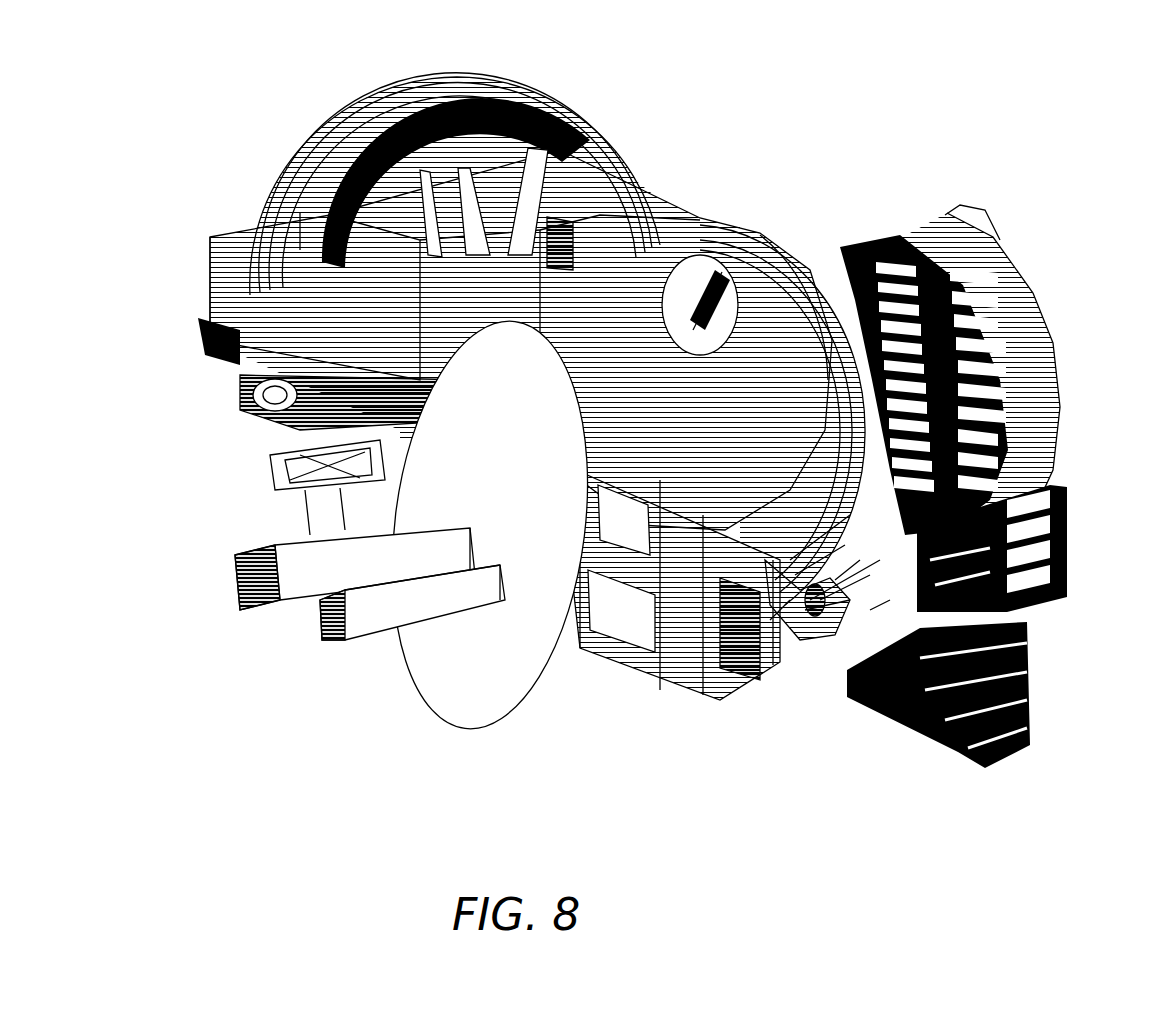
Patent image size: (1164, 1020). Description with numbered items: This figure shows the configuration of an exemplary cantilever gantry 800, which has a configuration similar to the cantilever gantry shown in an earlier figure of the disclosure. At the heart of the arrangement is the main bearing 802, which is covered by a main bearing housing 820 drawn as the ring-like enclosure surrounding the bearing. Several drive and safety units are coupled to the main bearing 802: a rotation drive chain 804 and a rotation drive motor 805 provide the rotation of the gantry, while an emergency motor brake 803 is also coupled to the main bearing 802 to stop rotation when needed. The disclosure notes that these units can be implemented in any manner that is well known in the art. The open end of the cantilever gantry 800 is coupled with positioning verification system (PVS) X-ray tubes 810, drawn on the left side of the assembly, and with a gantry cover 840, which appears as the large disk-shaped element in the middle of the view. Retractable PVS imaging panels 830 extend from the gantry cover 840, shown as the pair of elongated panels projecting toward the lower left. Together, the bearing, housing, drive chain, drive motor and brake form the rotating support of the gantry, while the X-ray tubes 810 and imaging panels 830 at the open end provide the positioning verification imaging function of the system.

The cantilever gantry 800 is at (962, 40).
The main bearing 802 is at (760, 225).
The emergency motor brake 803 is at (812, 632).
The rotation drive chain 804 is at (880, 525).
The rotation drive motor 805 is at (900, 620).
The positioning verification system (PVS) X-ray tubes 810 is at (390, 425).
The main bearing housing 820 is at (808, 225).
The retractable PVS imaging panels 830 is at (335, 636).
The gantry cover 840 is at (470, 494).